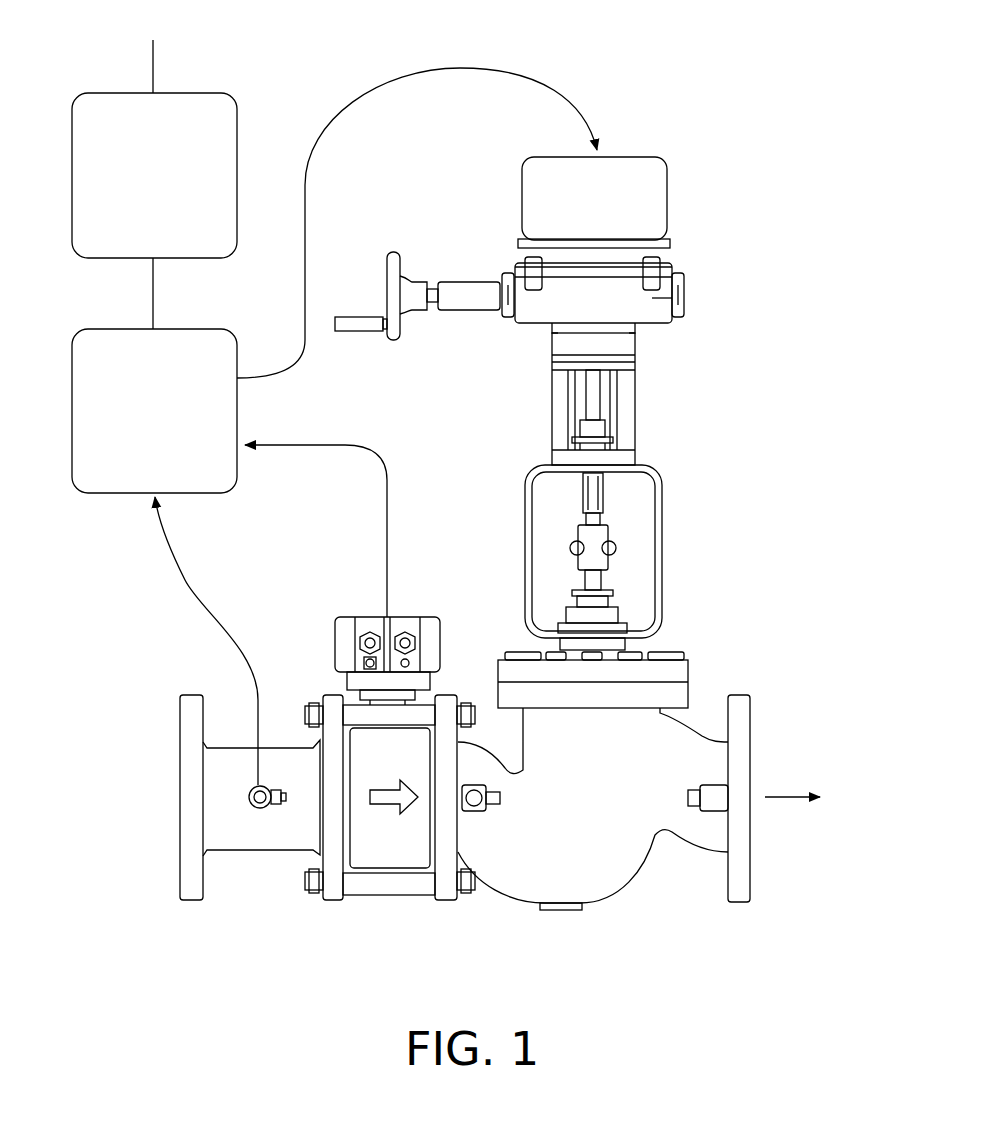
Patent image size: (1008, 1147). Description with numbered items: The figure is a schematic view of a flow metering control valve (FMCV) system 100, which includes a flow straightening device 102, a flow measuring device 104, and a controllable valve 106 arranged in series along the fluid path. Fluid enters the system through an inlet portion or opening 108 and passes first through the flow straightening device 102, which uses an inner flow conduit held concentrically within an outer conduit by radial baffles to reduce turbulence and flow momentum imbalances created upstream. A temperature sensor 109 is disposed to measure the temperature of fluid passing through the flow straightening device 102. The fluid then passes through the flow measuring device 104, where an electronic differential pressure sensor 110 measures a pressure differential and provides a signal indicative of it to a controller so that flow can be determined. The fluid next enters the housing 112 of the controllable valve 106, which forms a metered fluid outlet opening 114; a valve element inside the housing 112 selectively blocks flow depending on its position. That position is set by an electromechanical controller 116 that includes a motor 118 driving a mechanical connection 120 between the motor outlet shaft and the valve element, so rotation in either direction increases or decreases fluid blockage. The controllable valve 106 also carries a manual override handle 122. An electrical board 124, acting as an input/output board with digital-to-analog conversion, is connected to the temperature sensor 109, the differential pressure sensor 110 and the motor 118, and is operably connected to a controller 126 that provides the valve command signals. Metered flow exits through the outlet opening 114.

The flow metering control valve system 100 is at (797, 250).
The flow straightening device 102 is at (250, 852).
The flow measuring device 104 is at (405, 870).
The controllable valve 106 is at (628, 882).
The inlet portion or opening 108 is at (170, 808).
The temperature sensor 109 is at (264, 810).
The electronic differential pressure sensor 110 is at (410, 617).
The housing 112 is at (673, 748).
The metered fluid outlet opening 114 is at (777, 750).
The electromechanical controller 116 is at (717, 385).
The motor 118 is at (668, 192).
The mechanical connection 120 is at (667, 553).
The manual override handle 122 is at (393, 340).
The electrical board 124 is at (190, 329).
The controller 126 is at (237, 95).